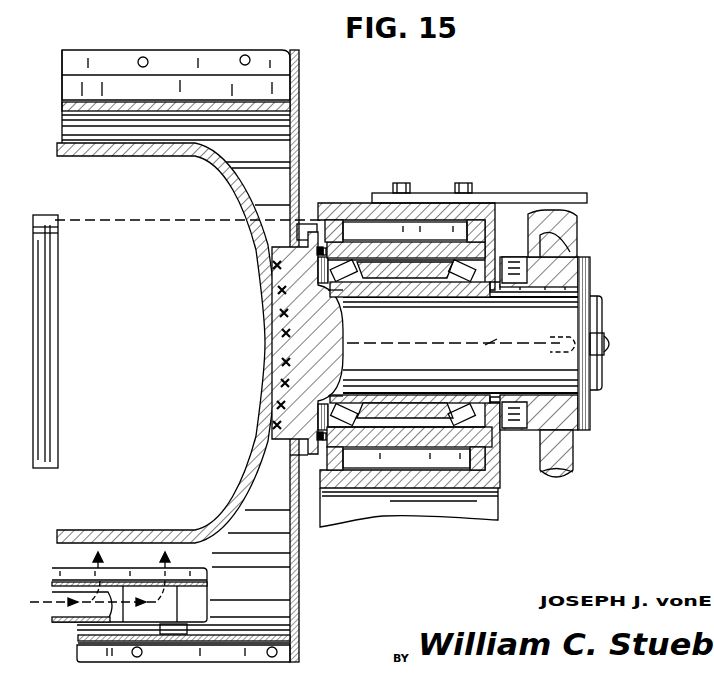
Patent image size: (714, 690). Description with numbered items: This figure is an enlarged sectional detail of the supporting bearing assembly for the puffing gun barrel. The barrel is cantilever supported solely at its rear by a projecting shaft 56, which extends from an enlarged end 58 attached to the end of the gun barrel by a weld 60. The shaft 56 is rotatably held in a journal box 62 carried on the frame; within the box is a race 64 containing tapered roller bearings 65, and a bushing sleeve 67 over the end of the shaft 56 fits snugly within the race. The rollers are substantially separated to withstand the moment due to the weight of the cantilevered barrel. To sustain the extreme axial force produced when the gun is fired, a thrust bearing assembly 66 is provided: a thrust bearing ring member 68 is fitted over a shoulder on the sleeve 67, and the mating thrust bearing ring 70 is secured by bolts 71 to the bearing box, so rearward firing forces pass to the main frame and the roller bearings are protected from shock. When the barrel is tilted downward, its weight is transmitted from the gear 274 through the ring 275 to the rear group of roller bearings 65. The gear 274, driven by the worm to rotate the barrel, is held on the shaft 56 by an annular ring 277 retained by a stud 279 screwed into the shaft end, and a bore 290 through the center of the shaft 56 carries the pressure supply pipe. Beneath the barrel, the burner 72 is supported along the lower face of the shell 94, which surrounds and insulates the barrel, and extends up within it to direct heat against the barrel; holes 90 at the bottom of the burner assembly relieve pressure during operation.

The projecting shaft 56 is at (590, 297).
The enlarged end 58 is at (280, 268).
The weld 60 is at (283, 335).
The journal box 62 is at (488, 212).
The race 64 is at (395, 285).
The tapered roller bearings 65 is at (345, 280).
The thrust bearing assembly 66 is at (313, 448).
The bushing sleeve 67 is at (378, 284).
The thrust bearing ring member 68 is at (292, 428).
The mating thrust bearing ring 70 is at (343, 376).
The bolts 71 is at (315, 245).
The burner 72 is at (207, 592).
The holes 90 is at (98, 642).
The shell 94 is at (298, 612).
The gear 274 is at (558, 240).
The ring 275 is at (562, 250).
The annular ring 277 is at (588, 302).
The stud 279 is at (592, 325).
The bore 290 is at (507, 333).